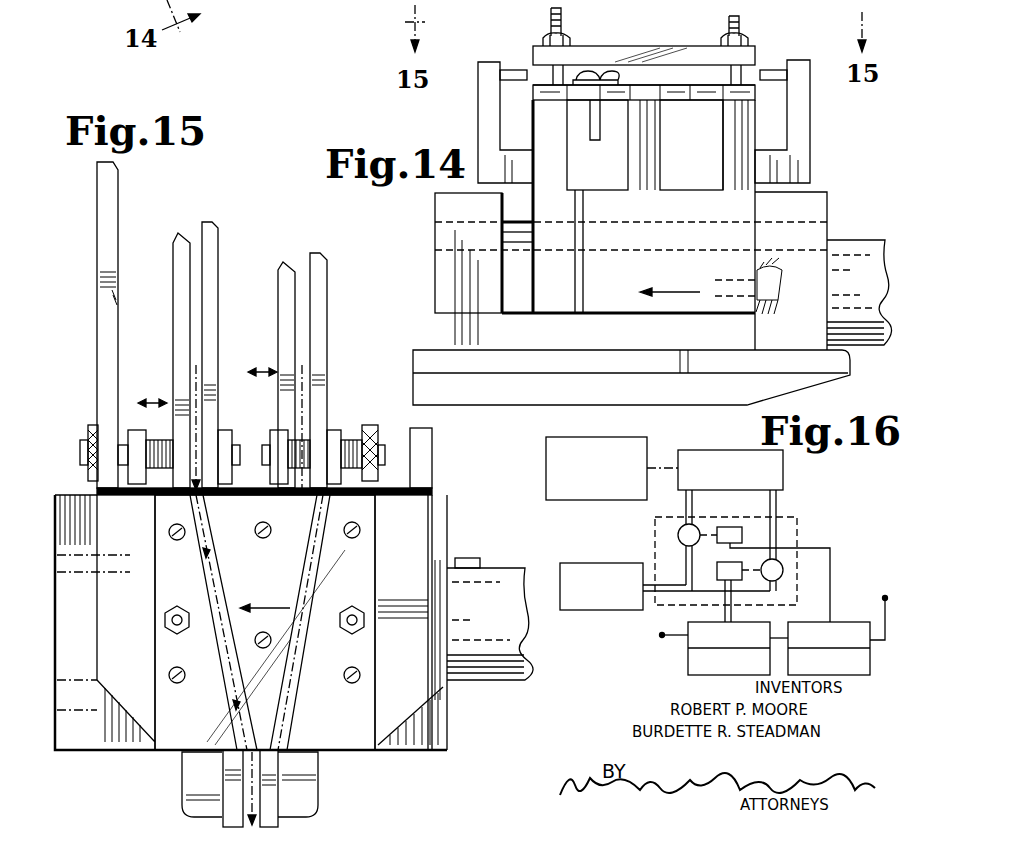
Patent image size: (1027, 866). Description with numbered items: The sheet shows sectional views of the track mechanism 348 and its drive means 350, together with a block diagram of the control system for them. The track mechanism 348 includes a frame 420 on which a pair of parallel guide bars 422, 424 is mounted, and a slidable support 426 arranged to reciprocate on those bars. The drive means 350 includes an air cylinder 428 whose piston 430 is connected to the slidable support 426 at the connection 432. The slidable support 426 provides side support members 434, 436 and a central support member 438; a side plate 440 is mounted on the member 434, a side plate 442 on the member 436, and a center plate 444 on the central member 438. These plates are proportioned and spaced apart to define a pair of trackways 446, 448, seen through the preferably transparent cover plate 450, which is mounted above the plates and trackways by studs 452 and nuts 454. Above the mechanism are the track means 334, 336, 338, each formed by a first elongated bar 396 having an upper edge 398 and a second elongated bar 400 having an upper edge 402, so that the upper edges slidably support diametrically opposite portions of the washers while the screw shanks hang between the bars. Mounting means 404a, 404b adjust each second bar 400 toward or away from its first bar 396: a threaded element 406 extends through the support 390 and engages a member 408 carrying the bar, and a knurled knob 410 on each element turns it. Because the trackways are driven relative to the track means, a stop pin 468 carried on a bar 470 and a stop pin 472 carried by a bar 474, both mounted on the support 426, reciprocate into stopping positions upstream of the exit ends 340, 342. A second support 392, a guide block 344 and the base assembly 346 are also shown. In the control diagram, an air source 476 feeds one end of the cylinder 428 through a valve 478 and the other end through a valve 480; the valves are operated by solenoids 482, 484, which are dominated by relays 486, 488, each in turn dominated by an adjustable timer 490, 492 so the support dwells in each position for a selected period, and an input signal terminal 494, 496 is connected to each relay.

In FIG. 15, the first track means 334 is at (296, 226).
In FIG. 15, the second track means 336 is at (206, 192).
In FIG. 15, the track means 338 is at (216, 774).
In FIG. 15, the exit end 340 is at (322, 428).
In FIG. 15, the exit end 342 is at (224, 420).
In FIG. 15, the guide block 344 is at (292, 775).
In FIG. 14, the slide base assembly 346 is at (420, 126).
In FIG. 15, the slide base assembly 346 is at (512, 720).
In FIG. 14, the track mechanism 348 is at (693, 47).
In FIG. 15, the track mechanism 348 is at (385, 758).
In FIG. 14, the drive means 350 is at (853, 240).
In FIG. 15, the drive means 350 is at (491, 568).
In FIG. 15, the support 390 is at (345, 428).
In FIG. 15, the clamp plate 392 is at (222, 432).
In FIG. 15, the first elongated bar 396 is at (328, 290).
In FIG. 15, the upper edge 398 is at (212, 226).
In FIG. 15, the second elongated bar 400 is at (172, 250).
In FIG. 15, the upper edge 402 is at (186, 243).
In FIG. 15, the mounting means 404a is at (400, 433).
In FIG. 15, the mounting means 404b is at (90, 418).
In FIG. 15, the threaded element 406 is at (150, 490).
In FIG. 15, the member 408 is at (270, 490).
In FIG. 15, the knurled knob 410 is at (88, 435).
In FIG. 14, the frame 420 is at (631, 363).
In FIG. 15, the frame 420 is at (72, 745).
In FIG. 14, the guide bar 422 is at (515, 245).
In FIG. 15, the guide bar 422 is at (445, 700).
In FIG. 15, the guide bar 424 is at (92, 548).
In FIG. 14, the slidable support 426 is at (628, 206).
In FIG. 16, the slidable support 426 is at (603, 495).
In FIG. 14, the air cylinder 428 is at (858, 325).
In FIG. 15, the air cylinder 428 is at (507, 656).
In FIG. 16, the air cylinder 428 is at (782, 455).
In FIG. 14, the piston 430 is at (760, 298).
In FIG. 16, the piston 430 is at (662, 466).
In FIG. 14, the connection 432 is at (725, 285).
In FIG. 14, the side support member 434 is at (733, 120).
In FIG. 14, the side support member 436 is at (563, 150).
In FIG. 14, the central support member 438 is at (647, 152).
In FIG. 14, the side plate 440 is at (686, 92).
In FIG. 15, the side plate 440 is at (395, 573).
In FIG. 15, the side plate 442 is at (150, 582).
In FIG. 15, the center plate 444 is at (330, 645).
In FIG. 15, the trackway 446 is at (300, 708).
In FIG. 15, the trackway 448 is at (213, 560).
In FIG. 14, the cover plate 450 is at (648, 46).
In FIG. 15, the cover plate 450 is at (265, 622).
In FIG. 14, the stud 452 is at (563, 20).
In FIG. 15, the stud 452 is at (170, 628).
In FIG. 14, the nut 454 is at (548, 41).
In FIG. 15, the nut 454 is at (166, 640).
In FIG. 14, the stop pin 468 is at (775, 80).
In FIG. 14, the bar 470 is at (800, 118).
In FIG. 15, the bar 470 is at (432, 462).
In FIG. 14, the stop pin 472 is at (510, 68).
In FIG. 14, the bar 474 is at (488, 110).
In FIG. 15, the bar 474 is at (103, 196).
In FIG. 16, the air source 476 is at (580, 610).
In FIG. 16, the valve 478 is at (784, 568).
In FIG. 16, the valve 480 is at (678, 537).
In FIG. 16, the solenoid 482 is at (717, 570).
In FIG. 16, the solenoid 484 is at (742, 530).
In FIG. 16, the relay 486 is at (770, 622).
In FIG. 16, the relay 488 is at (838, 622).
In FIG. 16, the timer 490 is at (688, 665).
In FIG. 16, the timer 492 is at (865, 672).
In FIG. 16, the input signal terminal 494 is at (662, 635).
In FIG. 16, the input signal terminal 496 is at (885, 596).